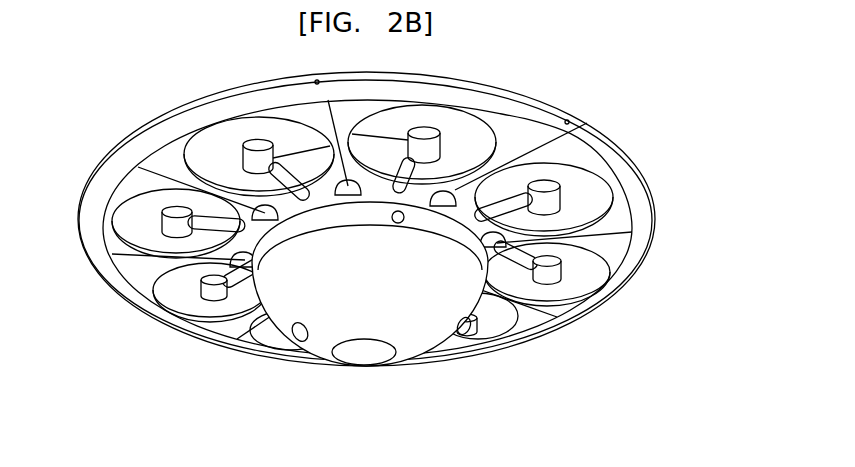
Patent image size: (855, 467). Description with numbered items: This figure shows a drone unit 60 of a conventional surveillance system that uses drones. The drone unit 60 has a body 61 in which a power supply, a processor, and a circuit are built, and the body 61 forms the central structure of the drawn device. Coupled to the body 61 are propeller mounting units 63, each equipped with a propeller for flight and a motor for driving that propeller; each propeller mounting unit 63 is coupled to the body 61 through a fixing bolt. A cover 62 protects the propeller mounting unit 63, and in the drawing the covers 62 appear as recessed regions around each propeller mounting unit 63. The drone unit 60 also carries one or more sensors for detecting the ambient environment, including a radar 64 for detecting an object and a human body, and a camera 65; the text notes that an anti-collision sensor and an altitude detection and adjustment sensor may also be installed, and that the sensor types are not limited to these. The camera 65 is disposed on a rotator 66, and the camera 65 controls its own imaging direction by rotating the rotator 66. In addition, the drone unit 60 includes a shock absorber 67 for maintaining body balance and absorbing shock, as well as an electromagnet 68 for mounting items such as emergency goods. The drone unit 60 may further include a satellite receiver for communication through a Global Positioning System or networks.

The drone unit 60 is at (120, 112).
The body 61 is at (254, 322).
The cover 62 is at (507, 136).
The propeller mounting unit 63 is at (562, 192).
The radar 64 is at (203, 323).
The camera 65 is at (290, 348).
The rotator 66 is at (543, 323).
The shock absorber 67 is at (380, 358).
The electromagnet 68 is at (428, 360).